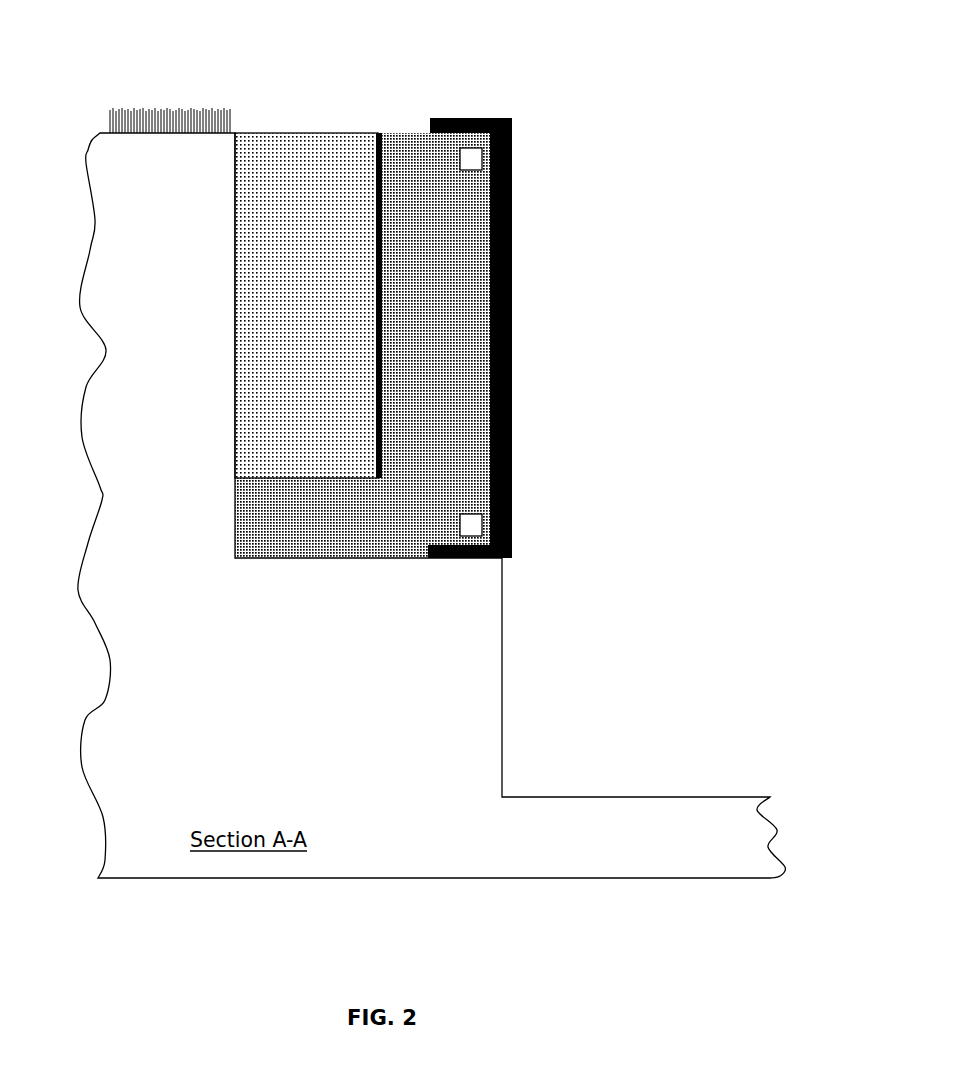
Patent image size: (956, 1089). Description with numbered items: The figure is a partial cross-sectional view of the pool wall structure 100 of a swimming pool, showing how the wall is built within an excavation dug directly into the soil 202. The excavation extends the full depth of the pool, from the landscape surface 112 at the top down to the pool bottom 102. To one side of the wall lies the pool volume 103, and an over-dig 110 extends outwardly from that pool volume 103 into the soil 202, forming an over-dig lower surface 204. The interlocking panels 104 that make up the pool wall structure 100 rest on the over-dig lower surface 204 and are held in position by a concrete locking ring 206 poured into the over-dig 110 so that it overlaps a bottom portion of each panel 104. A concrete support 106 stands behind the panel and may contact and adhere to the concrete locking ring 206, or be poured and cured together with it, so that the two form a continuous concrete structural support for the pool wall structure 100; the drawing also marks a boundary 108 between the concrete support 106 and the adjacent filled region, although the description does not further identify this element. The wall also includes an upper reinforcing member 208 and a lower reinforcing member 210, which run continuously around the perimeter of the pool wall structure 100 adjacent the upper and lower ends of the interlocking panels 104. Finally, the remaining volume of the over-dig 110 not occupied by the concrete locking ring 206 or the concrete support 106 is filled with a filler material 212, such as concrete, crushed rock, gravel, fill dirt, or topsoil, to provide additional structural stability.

The pool wall structure 100 is at (715, 162).
The pool bottom 102 is at (715, 757).
The pool volume 103 is at (768, 406).
The interlocking panels 104 is at (555, 338).
The concrete support 106 is at (456, 317).
The interface line 108 is at (343, 305).
The over-dig 110 is at (251, 110).
The landscape surface 112 is at (131, 100).
The soil 202 is at (187, 440).
The over-dig lower surface 204 is at (279, 617).
The concrete locking ring 206 is at (371, 522).
The upper reinforcing member 208 is at (411, 133).
The lower reinforcing member 210 is at (376, 622).
The filler material 212 is at (321, 290).